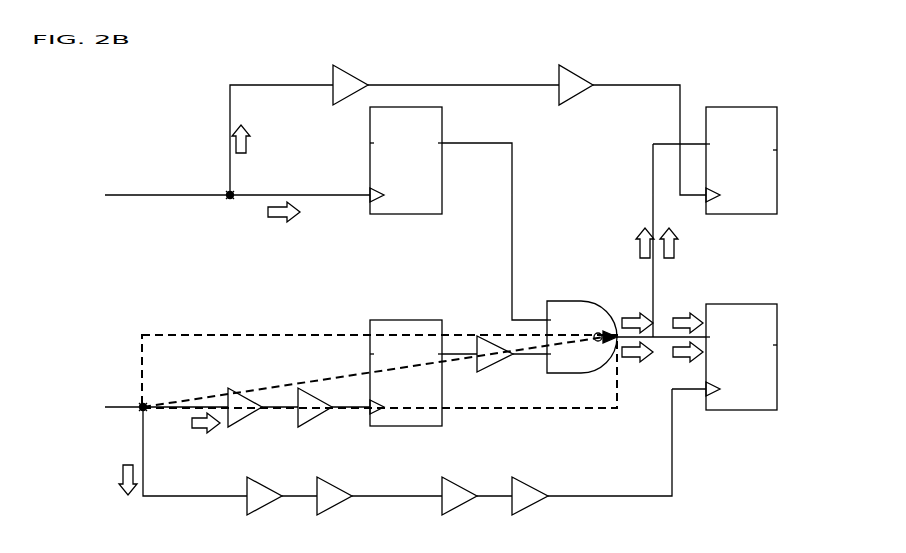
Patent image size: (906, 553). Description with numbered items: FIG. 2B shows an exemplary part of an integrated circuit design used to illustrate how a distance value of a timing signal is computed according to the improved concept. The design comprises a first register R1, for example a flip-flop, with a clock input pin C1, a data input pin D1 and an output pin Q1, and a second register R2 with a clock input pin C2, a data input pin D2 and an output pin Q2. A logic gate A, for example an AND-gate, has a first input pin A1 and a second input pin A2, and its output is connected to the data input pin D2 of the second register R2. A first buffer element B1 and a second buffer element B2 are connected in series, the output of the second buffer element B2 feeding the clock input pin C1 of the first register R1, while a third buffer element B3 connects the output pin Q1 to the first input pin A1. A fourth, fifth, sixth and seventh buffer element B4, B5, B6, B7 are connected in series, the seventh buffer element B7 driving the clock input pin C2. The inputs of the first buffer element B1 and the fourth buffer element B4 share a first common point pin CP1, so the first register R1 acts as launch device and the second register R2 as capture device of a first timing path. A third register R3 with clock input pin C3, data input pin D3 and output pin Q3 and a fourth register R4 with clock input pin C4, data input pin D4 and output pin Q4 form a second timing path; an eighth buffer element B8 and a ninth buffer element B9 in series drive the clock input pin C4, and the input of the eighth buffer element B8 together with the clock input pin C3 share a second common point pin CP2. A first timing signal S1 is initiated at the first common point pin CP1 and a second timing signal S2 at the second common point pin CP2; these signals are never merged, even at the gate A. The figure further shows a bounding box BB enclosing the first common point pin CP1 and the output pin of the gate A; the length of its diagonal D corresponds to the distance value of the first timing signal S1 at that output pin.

The first register R1 is at (406, 365).
The second register R2 is at (741, 349).
The third register R3 is at (406, 153).
The fourth register R4 is at (741, 153).
The first buffer element B1 is at (245, 407).
The second buffer element B2 is at (315, 407).
The third buffer element B3 is at (495, 354).
The fourth buffer element B4 is at (264, 496).
The fifth buffer element B5 is at (334, 496).
The sixth buffer element B6 is at (459, 496).
The seventh buffer element B7 is at (530, 496).
The eighth buffer element B8 is at (350, 85).
The ninth buffer element B9 is at (576, 85).
The logic gate A is at (582, 329).
The first input pin A1 is at (557, 354).
The second input pin A2 is at (557, 322).
The bounding box BB is at (379, 371).
The diagonal D is at (380, 369).
The first common point pin CP1 is at (133, 399).
The second common point pin CP2 is at (216, 189).
The first timing signal S1 is at (400, 361).
The second timing signal S2 is at (467, 229).
The data input pin D1 is at (382, 353).
The output pin Q1 is at (429, 359).
The clock input pin C1 is at (381, 398).
The data input pin D2 is at (717, 338).
The output pin Q2 is at (764, 348).
The clock input pin C2 is at (716, 382).
The data input pin D3 is at (382, 137).
The output pin Q3 is at (429, 145).
The clock input pin C3 is at (381, 187).
The data input pin D4 is at (717, 144).
The output pin Q4 is at (764, 151).
The clock input pin C4 is at (716, 188).